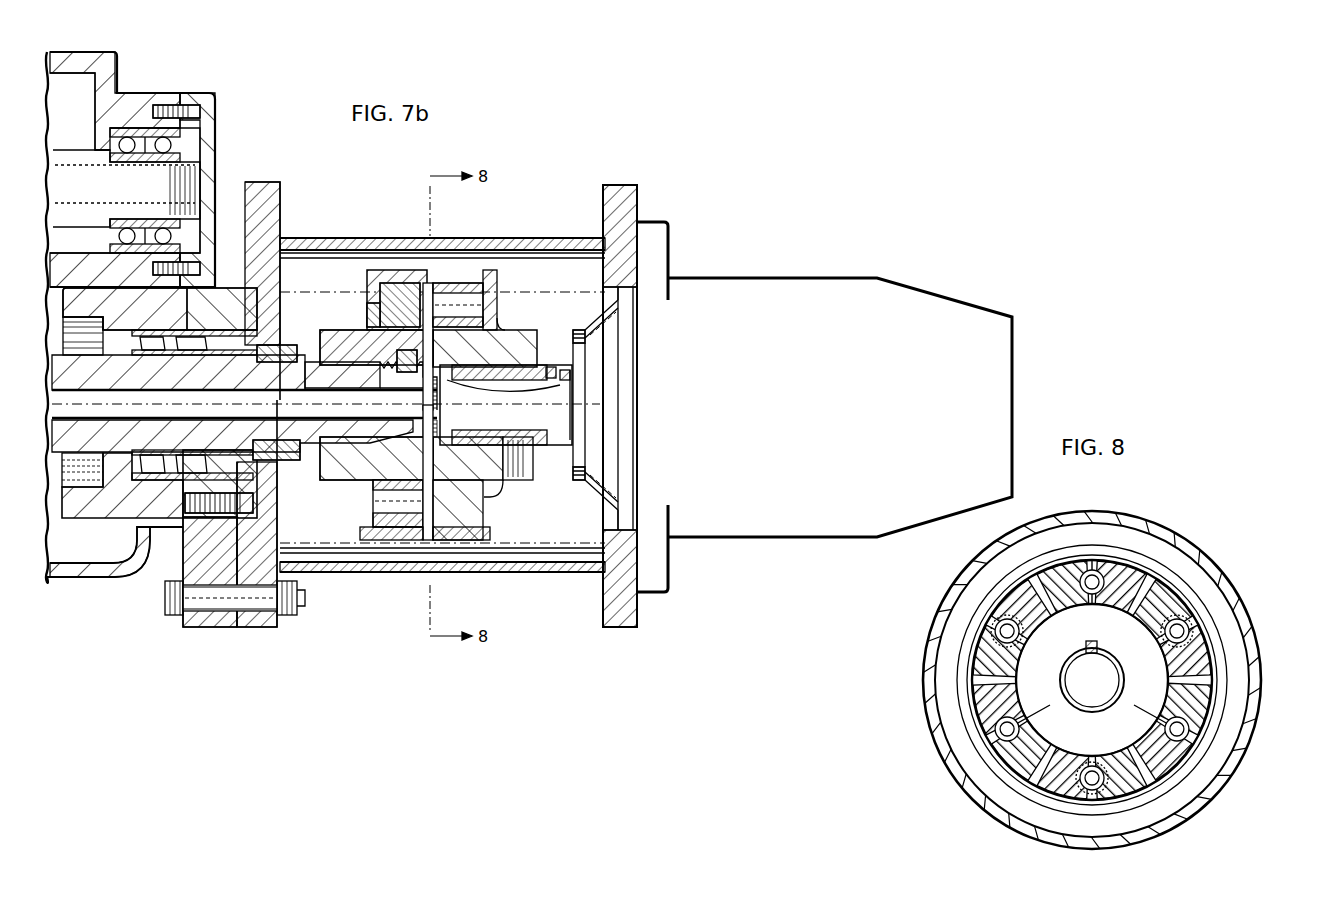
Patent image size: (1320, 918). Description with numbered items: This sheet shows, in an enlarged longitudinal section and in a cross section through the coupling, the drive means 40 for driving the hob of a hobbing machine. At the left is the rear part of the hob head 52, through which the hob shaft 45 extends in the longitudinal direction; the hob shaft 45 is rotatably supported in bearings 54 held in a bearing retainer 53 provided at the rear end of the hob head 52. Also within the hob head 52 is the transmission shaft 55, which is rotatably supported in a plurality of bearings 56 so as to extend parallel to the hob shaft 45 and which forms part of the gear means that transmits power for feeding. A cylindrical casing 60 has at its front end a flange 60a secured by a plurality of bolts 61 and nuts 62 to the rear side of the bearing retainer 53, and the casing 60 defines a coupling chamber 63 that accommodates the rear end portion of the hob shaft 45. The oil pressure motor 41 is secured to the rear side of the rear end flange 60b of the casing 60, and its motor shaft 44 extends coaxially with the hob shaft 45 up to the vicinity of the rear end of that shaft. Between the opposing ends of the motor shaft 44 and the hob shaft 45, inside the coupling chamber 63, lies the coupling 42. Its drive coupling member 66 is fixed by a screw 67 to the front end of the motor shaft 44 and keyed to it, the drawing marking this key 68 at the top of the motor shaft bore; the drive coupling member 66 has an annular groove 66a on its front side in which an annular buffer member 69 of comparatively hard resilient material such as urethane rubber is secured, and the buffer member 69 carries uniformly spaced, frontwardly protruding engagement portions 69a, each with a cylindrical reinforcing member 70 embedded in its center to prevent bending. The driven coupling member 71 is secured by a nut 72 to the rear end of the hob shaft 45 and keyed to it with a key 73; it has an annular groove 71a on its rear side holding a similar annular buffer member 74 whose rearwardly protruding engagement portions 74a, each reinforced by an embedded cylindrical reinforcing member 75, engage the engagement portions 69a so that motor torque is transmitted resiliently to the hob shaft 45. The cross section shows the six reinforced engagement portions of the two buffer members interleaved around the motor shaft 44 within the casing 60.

In FIG. 7B, the drive means 40 is at (790, 282).
In FIG. 7B, the oil pressure motor 41 is at (728, 282).
In FIG. 7B, the coupling 42 is at (382, 270).
In FIG. 7B, the motor shaft 44 is at (553, 446).
In FIG. 8, the motor shaft 44 is at (1103, 692).
In FIG. 7B, the hob shaft 45 is at (300, 460).
In FIG. 7B, the hob head 52 is at (86, 60).
In FIG. 7B, the bearing retainer 53 is at (215, 622).
In FIG. 7B, the bearings 54 is at (165, 360).
In FIG. 7B, the transmission shaft 55 is at (52, 163).
In FIG. 7B, the bearings 56 is at (136, 158).
In FIG. 7B, the cylindrical casing 60 is at (343, 238).
In FIG. 8, the cylindrical casing 60 is at (1145, 530).
In FIG. 7B, the flange 60a is at (258, 622).
In FIG. 7B, the rear end flange 60b is at (618, 627).
In FIG. 7B, the bolts 61 is at (173, 617).
In FIG. 7B, the nuts 62 is at (293, 612).
In FIG. 7B, the coupling chamber 63 is at (345, 259).
In FIG. 8, the coupling chamber 63 is at (1238, 632).
In FIG. 7B, the drive coupling member 66 is at (520, 345).
In FIG. 8, the drive coupling member 66 is at (1178, 585).
In FIG. 7B, the annular groove 66a is at (490, 287).
In FIG. 8, the annular groove 66a is at (1215, 592).
In FIG. 7B, the screw 67 is at (514, 479).
In FIG. 7B, the key 68 is at (551, 366).
In FIG. 8, the key 68 is at (1096, 644).
In FIG. 7B, the annular buffer member 69 is at (480, 520).
In FIG. 8, the annular buffer member 69 is at (1064, 565).
In FIG. 7B, the engagement portions 69a is at (428, 283).
In FIG. 8, the engagement portions 69a is at (1088, 570).
In FIG. 7B, the cylindrical reinforcing member 70 is at (470, 306).
In FIG. 8, the cylindrical reinforcing member 70 is at (1090, 595).
In FIG. 7B, the driven coupling member 71 is at (322, 340).
In FIG. 7B, the annular groove 71a is at (380, 300).
In FIG. 7B, the nut 72 is at (420, 392).
In FIG. 7B, the key 73 is at (350, 389).
In FIG. 7B, the annular buffer member 74 is at (367, 318).
In FIG. 7B, the engagement portions 74a is at (433, 535).
In FIG. 8, the engagement portions 74a is at (1012, 600).
In FIG. 7B, the cylindrical reinforcing member 75 is at (373, 503).
In FIG. 8, the cylindrical reinforcing member 75 is at (975, 650).